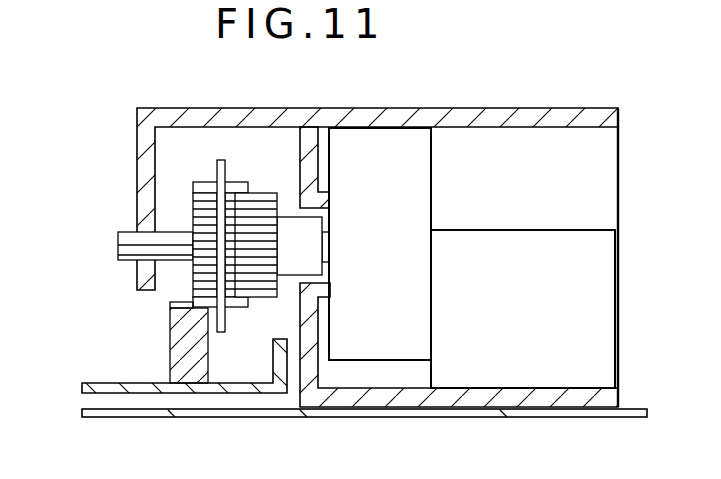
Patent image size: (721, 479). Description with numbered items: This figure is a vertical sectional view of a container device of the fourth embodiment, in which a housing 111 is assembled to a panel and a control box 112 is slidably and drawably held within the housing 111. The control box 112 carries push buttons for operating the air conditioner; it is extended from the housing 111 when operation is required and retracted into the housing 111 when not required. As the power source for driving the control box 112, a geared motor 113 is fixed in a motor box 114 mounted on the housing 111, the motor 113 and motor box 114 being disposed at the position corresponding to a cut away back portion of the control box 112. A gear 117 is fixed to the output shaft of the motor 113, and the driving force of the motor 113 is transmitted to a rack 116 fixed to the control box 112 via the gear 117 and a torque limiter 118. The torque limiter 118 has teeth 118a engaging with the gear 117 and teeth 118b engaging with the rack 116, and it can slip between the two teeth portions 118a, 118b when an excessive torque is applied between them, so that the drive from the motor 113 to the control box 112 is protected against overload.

The housing 111 is at (275, 413).
The control box 112 is at (108, 382).
The geared motor 113 is at (378, 345).
The motor box 114 is at (408, 108).
The rack 116 is at (172, 340).
The gear 117 is at (260, 193).
The torque limiter 118 is at (205, 180).
The teeth 118a is at (237, 182).
The teeth 118b is at (193, 187).